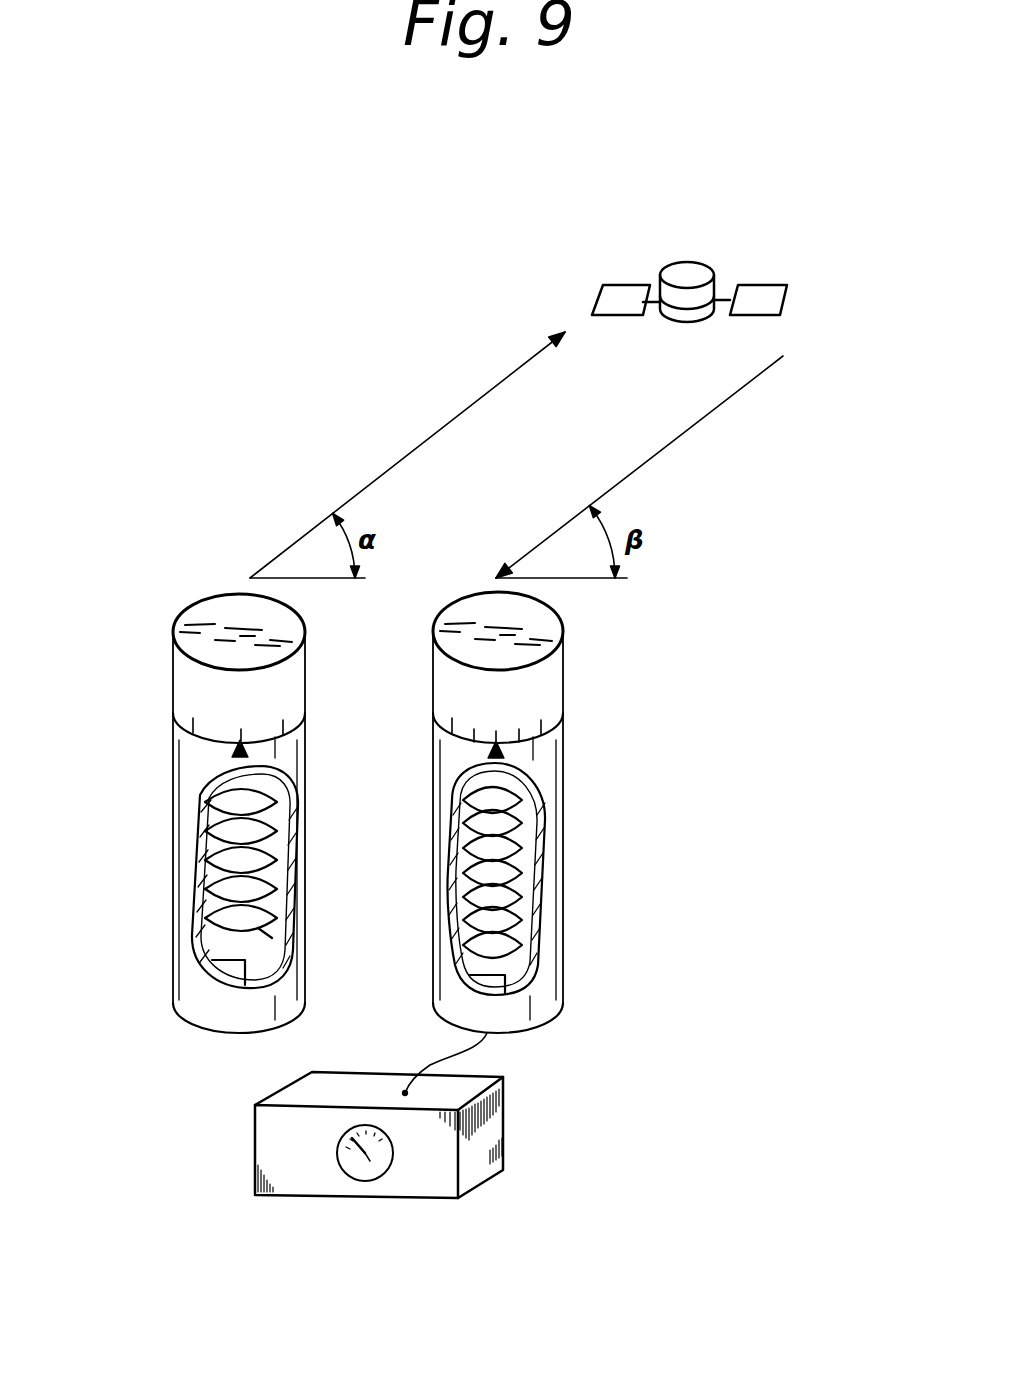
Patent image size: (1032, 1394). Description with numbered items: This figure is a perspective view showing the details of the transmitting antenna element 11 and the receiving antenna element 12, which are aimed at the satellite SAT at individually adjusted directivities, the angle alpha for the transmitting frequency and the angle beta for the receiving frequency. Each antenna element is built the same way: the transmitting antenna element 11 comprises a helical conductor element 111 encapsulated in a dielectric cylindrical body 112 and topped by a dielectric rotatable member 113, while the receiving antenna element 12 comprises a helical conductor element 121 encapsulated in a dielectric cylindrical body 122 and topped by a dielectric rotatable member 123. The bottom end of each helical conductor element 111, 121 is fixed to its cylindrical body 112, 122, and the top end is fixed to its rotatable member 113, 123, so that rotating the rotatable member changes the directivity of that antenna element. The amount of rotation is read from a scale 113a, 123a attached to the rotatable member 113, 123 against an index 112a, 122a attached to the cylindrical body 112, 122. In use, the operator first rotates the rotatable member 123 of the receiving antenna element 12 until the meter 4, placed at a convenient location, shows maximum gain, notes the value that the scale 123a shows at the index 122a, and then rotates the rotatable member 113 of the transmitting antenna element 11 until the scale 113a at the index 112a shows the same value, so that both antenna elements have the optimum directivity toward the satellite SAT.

The transmitting antenna element 11 is at (147, 647).
The receiving antenna element 12 is at (648, 779).
The helical conductor element 111 is at (272, 938).
The dielectric cylindrical body 112 is at (306, 842).
The index 112a is at (250, 754).
The dielectric rotatable member 113 is at (308, 690).
The scale 113a is at (292, 689).
The helical conductor element 121 is at (520, 935).
The dielectric cylindrical body 122 is at (566, 848).
The index 122a is at (500, 757).
The dielectric rotatable member 123 is at (562, 648).
The scale 123a is at (568, 687).
The meter 4 is at (385, 1178).
The satellite SAT is at (787, 300).